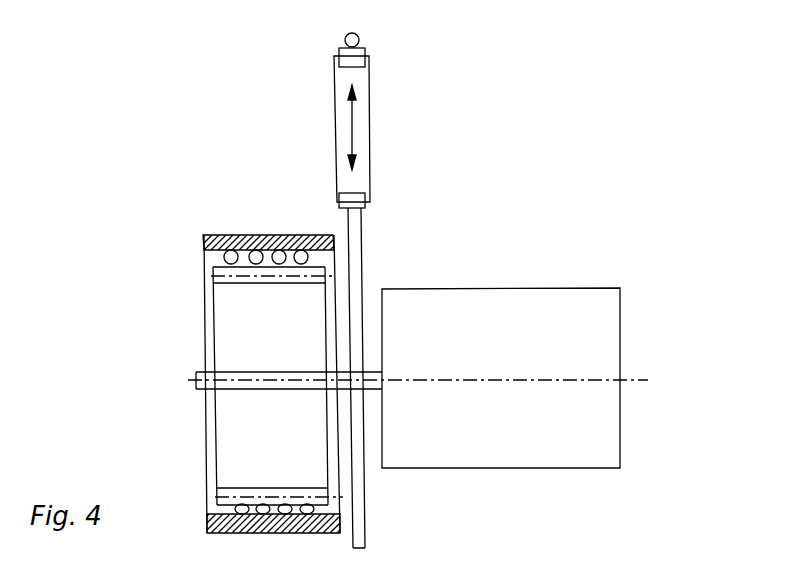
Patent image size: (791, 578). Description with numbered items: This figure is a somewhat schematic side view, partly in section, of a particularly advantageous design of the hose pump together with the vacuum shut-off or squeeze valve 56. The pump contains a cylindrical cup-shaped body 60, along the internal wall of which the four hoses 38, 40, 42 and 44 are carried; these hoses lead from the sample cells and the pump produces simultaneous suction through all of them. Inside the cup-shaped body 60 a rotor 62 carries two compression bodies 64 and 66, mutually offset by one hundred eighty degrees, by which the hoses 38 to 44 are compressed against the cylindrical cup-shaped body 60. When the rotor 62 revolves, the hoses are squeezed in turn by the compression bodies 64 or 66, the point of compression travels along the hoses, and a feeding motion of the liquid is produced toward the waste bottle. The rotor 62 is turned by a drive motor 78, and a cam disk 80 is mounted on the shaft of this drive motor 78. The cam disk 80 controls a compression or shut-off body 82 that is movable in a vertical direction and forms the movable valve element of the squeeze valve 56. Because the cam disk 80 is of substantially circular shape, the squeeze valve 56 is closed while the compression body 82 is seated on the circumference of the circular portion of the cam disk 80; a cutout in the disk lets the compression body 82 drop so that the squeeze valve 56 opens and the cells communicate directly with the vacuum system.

The hose 38 is at (219, 246).
The hose 40 is at (258, 251).
The hose 42 is at (282, 251).
The hose 44 is at (310, 248).
The squeeze valve 56 is at (400, 290).
The cylindrical cup-shaped body 60 is at (242, 245).
The rotor 62 is at (227, 323).
The compression body 64 is at (298, 272).
The compression body 66 is at (240, 497).
The drive motor 78 is at (537, 298).
The cam disk 80 is at (359, 257).
The compression body 82 is at (365, 157).